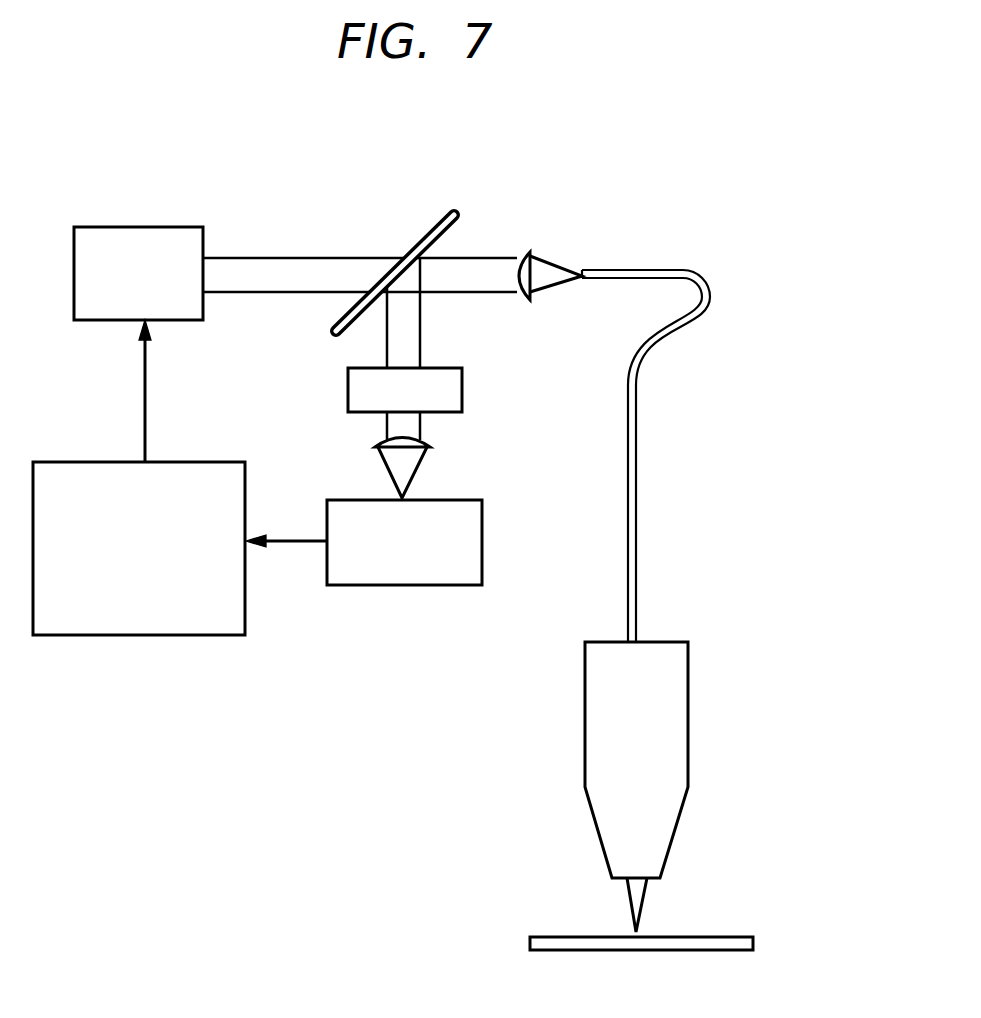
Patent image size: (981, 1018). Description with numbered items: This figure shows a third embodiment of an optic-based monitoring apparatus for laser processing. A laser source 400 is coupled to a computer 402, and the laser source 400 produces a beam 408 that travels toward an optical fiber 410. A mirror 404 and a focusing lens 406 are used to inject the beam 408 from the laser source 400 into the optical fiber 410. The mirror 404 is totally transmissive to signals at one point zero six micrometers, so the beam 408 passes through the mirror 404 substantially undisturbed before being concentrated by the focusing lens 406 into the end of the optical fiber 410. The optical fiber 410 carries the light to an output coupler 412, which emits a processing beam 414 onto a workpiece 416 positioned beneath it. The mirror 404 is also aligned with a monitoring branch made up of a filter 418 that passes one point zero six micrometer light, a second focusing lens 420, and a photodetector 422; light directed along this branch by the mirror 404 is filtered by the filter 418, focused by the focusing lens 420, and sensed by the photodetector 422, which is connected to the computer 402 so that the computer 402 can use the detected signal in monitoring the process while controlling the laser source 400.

The laser source 400 is at (152, 226).
The computer 402 is at (118, 637).
The mirror 404 is at (457, 212).
The focusing lens 406 is at (540, 252).
The beam 408 is at (270, 257).
The optical fiber 410 is at (641, 385).
The output coupler 412 is at (690, 708).
The processing beam 414 is at (641, 910).
The workpiece 416 is at (740, 950).
The filter 418 is at (463, 390).
The focusing lens 420 is at (431, 446).
The photodetector 422 is at (400, 586).